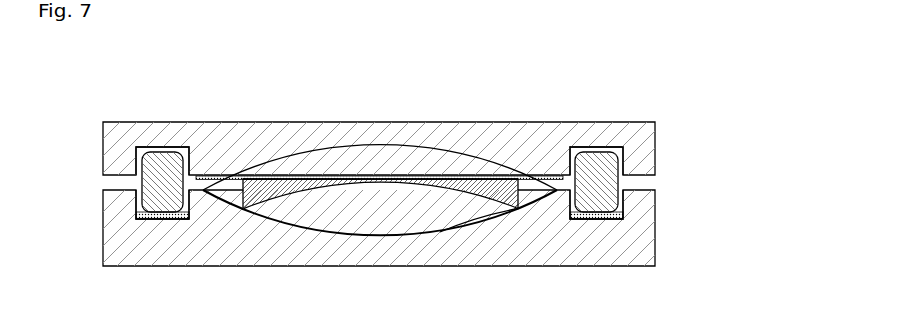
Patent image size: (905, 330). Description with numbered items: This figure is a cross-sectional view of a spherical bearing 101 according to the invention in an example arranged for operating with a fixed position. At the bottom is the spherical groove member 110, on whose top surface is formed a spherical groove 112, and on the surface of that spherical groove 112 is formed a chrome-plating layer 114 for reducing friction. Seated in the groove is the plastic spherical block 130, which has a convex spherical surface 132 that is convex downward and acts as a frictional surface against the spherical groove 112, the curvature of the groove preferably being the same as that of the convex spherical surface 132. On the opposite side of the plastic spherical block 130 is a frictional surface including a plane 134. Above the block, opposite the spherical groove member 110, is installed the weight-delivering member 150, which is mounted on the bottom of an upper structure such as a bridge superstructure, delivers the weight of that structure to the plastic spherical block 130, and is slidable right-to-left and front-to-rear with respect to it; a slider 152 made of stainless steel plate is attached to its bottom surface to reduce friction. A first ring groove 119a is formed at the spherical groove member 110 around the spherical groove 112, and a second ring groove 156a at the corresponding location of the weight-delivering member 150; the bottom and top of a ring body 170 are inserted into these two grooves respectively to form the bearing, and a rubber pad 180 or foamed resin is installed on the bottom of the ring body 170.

The spherical bearing 101 is at (540, 95).
The spherical groove member 110 is at (558, 245).
The spherical groove 112 is at (473, 212).
The chrome-plating layer 114 is at (233, 193).
The first ring groove 119a is at (133, 192).
The plastic spherical block 130 is at (387, 193).
The convex spherical surface 132 is at (403, 236).
The plane 134 is at (355, 172).
The weight-delivering member 150 is at (467, 148).
The slider 152 is at (285, 177).
The second ring groove 156a is at (135, 143).
The ring body 170 is at (160, 160).
The rubber pad 180 is at (130, 215).